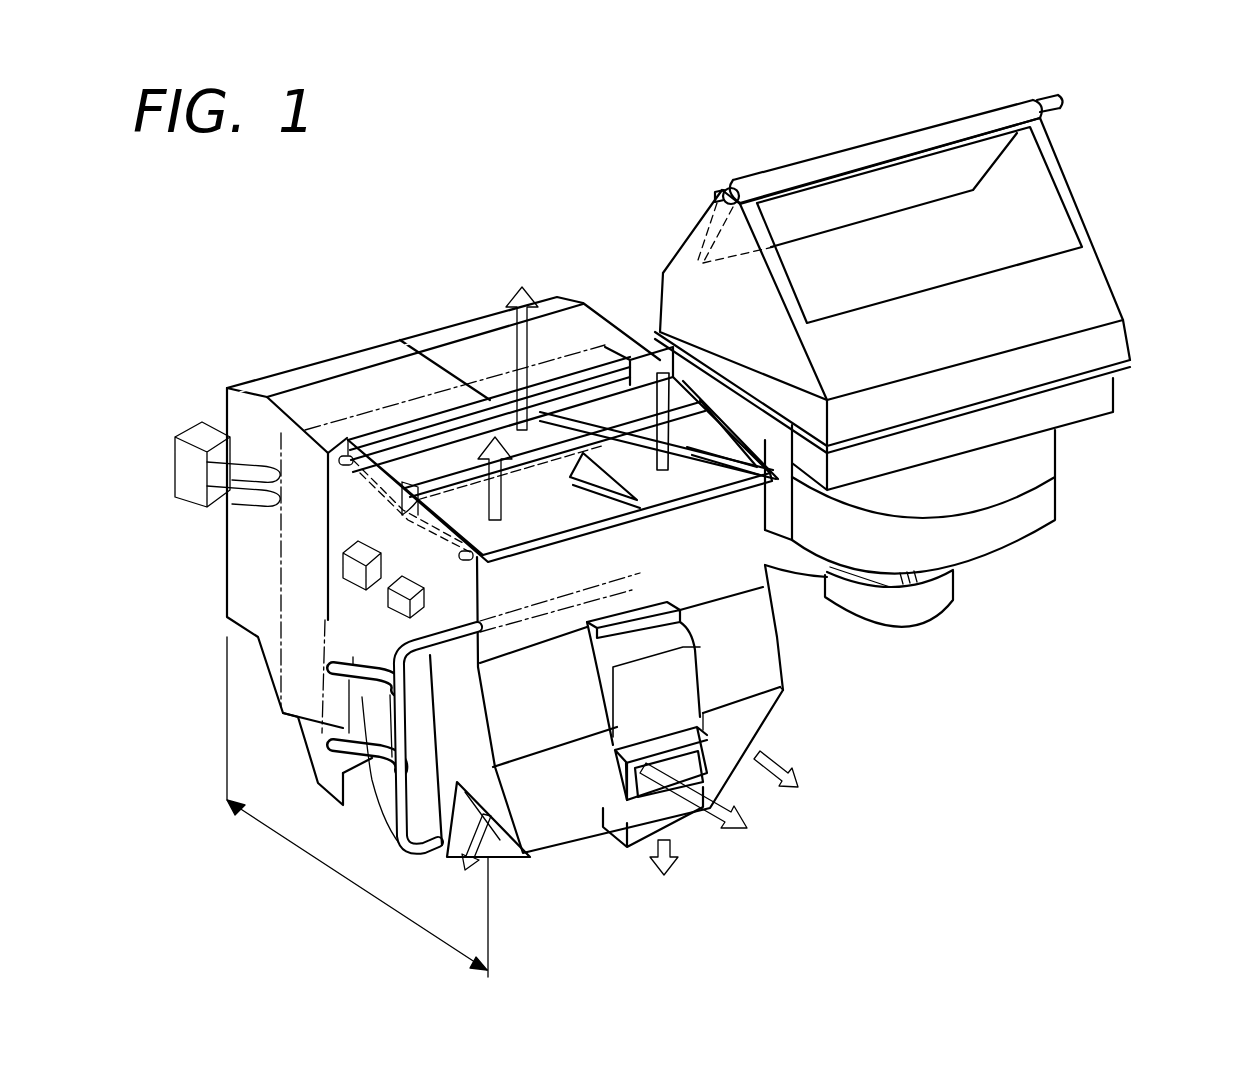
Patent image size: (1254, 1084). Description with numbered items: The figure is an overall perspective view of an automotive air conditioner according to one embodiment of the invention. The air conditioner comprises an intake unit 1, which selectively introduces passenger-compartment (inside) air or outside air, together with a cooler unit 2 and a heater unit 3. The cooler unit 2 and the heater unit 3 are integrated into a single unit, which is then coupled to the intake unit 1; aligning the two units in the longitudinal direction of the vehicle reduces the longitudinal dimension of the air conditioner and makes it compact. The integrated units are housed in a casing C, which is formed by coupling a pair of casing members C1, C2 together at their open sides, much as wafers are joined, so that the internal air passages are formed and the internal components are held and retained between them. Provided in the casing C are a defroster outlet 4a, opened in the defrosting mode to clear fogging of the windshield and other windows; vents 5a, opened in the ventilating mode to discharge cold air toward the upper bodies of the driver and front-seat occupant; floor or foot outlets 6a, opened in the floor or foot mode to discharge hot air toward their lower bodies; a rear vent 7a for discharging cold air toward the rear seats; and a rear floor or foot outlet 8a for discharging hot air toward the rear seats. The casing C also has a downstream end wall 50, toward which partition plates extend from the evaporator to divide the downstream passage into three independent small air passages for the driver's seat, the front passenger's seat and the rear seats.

The intake unit 1 is at (1082, 508).
The cooler unit 2 is at (205, 648).
The heater unit 3 is at (360, 810).
The casing C is at (570, 188).
The casing member C1 is at (380, 353).
The casing member C2 is at (477, 327).
The defroster outlet 4a is at (620, 357).
The vents 5a is at (683, 472).
The floor or foot outlets 6a is at (502, 838).
The rear vent 7a is at (683, 757).
The rear floor or foot outlet 8a is at (640, 845).
The downstream end wall 50 is at (730, 770).